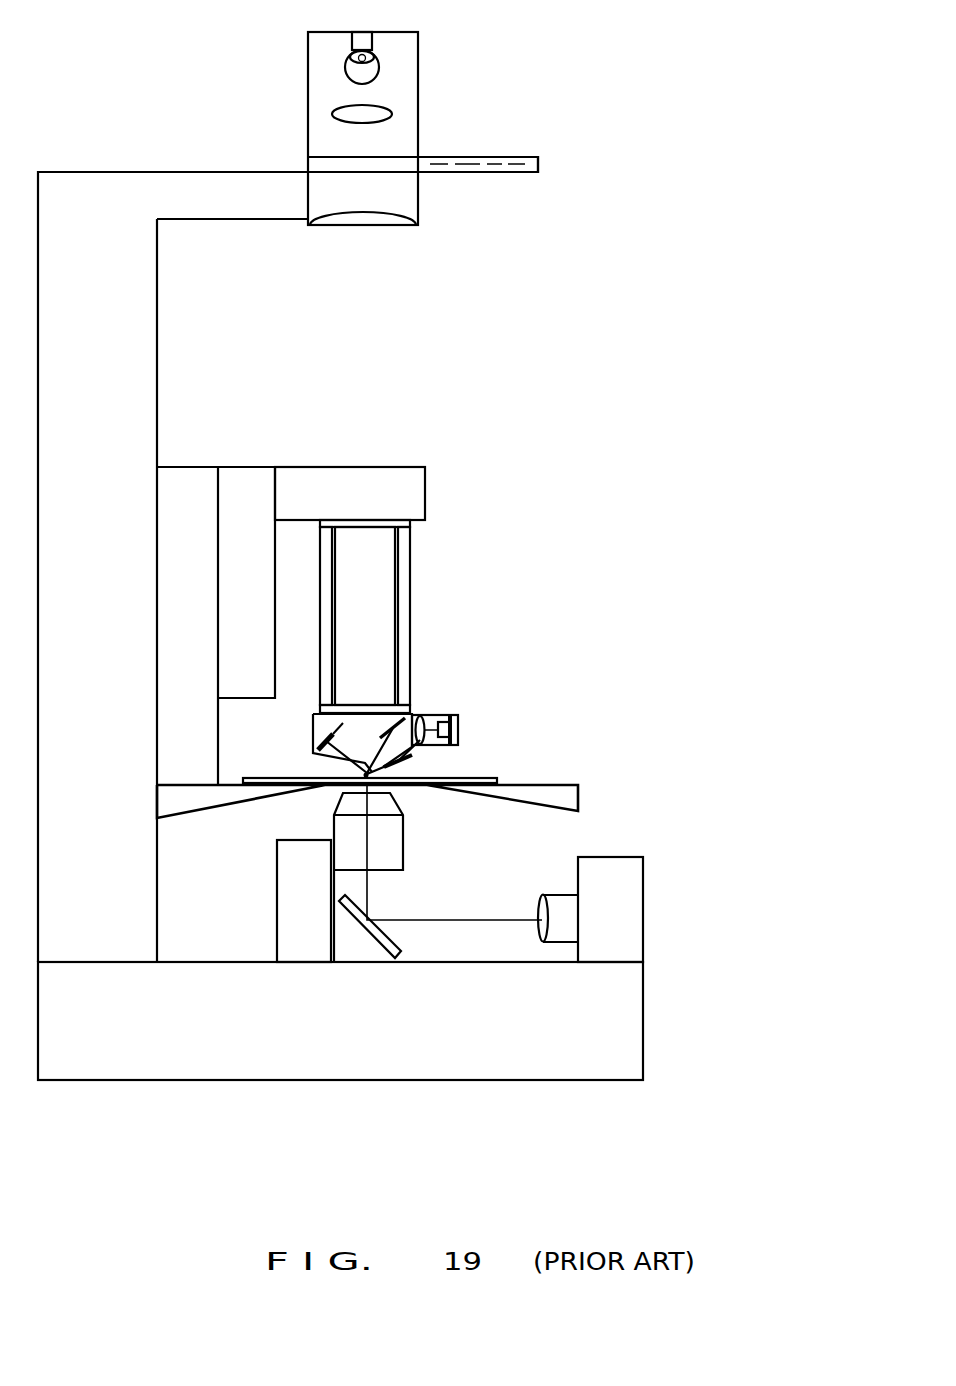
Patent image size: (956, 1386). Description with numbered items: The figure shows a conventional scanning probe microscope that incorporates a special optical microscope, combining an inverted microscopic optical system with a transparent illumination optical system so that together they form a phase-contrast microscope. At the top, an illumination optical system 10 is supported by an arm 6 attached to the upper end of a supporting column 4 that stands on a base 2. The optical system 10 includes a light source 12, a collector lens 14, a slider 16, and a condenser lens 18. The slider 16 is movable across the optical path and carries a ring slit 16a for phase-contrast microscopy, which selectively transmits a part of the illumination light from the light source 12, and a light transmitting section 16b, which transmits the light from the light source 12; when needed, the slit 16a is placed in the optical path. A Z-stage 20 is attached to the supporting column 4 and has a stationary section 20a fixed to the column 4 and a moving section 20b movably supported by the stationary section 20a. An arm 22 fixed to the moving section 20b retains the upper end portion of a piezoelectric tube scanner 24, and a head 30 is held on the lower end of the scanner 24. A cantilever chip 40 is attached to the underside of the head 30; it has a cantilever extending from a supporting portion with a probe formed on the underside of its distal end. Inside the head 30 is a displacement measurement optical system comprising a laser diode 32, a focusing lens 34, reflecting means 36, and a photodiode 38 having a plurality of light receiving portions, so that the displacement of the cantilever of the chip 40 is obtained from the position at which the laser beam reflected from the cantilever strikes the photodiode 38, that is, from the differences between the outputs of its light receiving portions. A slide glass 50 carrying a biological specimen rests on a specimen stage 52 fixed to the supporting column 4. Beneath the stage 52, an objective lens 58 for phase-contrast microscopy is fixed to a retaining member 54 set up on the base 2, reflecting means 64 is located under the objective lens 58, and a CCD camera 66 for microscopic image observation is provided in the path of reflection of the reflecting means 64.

The base 2 is at (643, 1040).
The supporting column 4 is at (143, 340).
The arm 6 is at (222, 182).
The illumination optical system 10 is at (351, 121).
The light source 12 is at (418, 43).
The collector lens 14 is at (390, 112).
The slider 16 is at (431, 133).
The ring slit 16a is at (482, 157).
The light transmitting section 16b is at (323, 157).
The condenser lens 18 is at (408, 212).
The Z-stage 20 is at (232, 580).
The stationary section 20a is at (180, 465).
The moving section 20b is at (265, 465).
The arm 22 is at (320, 465).
The piezoelectric tube scanner 24 is at (412, 562).
The head 30 is at (360, 713).
The laser diode 32 is at (447, 714).
The focusing lens 34 is at (422, 715).
The reflecting means 36 is at (408, 716).
The photodiode 38 is at (315, 740).
The cantilever chip 40 is at (413, 756).
The slide glass 50 is at (500, 778).
The specimen stage 52 is at (222, 806).
The retaining member 54 is at (278, 905).
The objective lens 58 is at (403, 852).
The reflecting means 64 is at (401, 945).
The CCD camera 66 is at (607, 858).